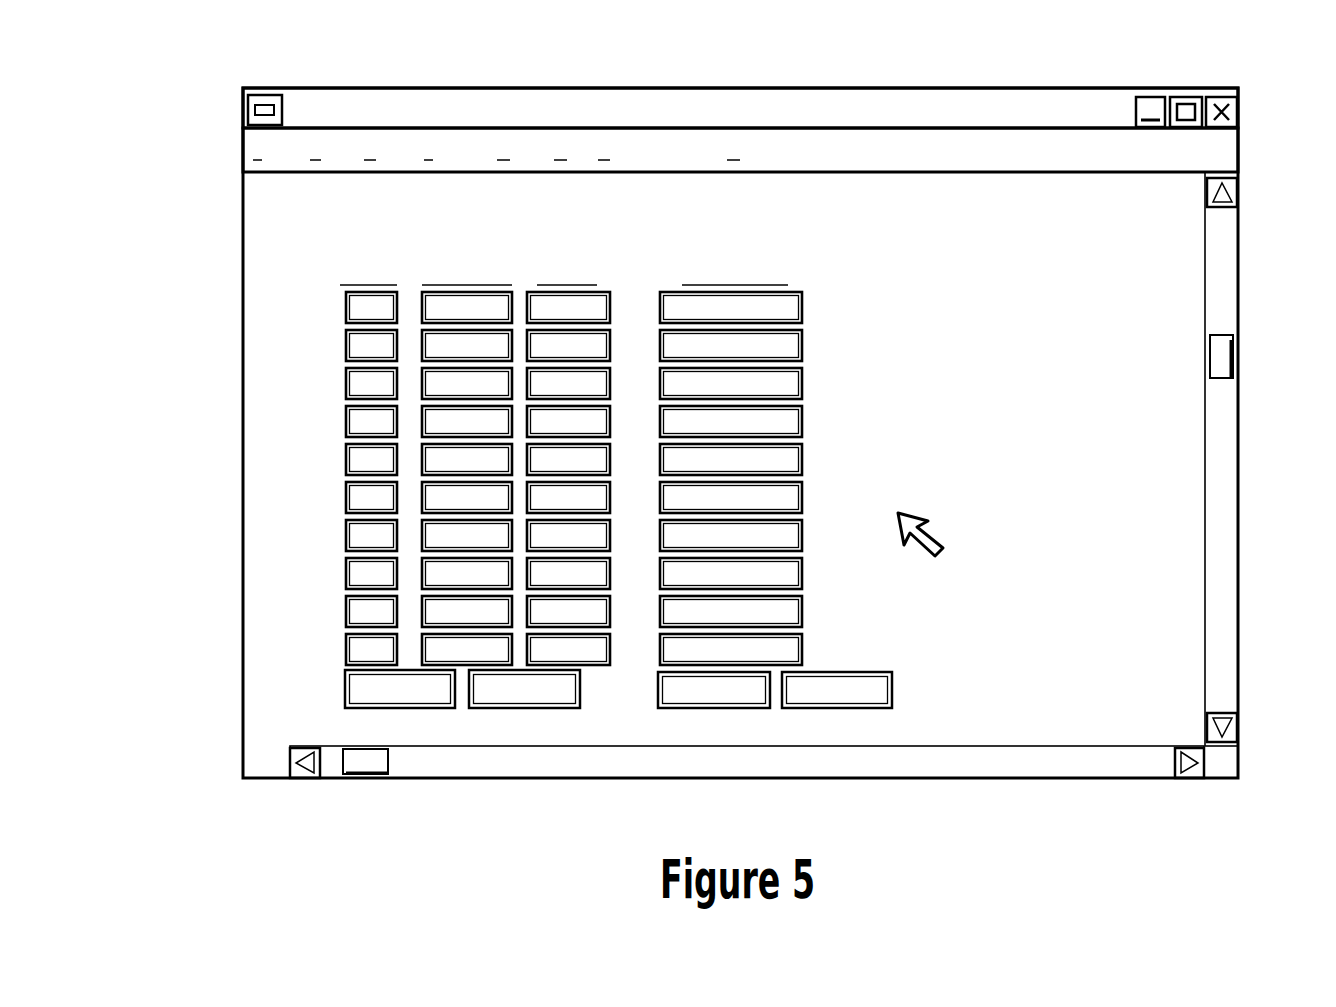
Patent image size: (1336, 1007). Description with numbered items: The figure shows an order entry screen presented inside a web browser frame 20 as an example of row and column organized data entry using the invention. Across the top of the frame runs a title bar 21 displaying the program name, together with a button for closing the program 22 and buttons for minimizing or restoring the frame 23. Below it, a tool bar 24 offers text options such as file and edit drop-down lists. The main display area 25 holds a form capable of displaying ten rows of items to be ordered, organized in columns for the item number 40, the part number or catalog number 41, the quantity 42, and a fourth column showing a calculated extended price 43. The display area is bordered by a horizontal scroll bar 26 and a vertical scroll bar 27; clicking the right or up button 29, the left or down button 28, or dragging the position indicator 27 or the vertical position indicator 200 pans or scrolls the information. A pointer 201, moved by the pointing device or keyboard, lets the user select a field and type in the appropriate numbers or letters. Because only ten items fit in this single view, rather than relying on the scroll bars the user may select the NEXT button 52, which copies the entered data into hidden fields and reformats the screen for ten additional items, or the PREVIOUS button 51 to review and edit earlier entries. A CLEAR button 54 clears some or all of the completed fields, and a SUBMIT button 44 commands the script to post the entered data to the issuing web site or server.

The web browser frame 20 is at (242, 313).
The title bar 21 is at (543, 108).
The close button 22 is at (267, 95).
The minimize/restore buttons 23 is at (1201, 90).
The tool bar 24 is at (607, 137).
The display area 25 is at (522, 470).
The horizontal scroll bar 26 is at (532, 780).
The vertical scroll bar / horizontal position indicator 27 is at (1239, 492).
The left/down button 28 is at (1239, 727).
The right/up button 29 is at (1239, 192).
The item number column 40 is at (397, 278).
The part number column 41 is at (512, 279).
The quantity column 42 is at (597, 282).
The extended price column 43 is at (788, 278).
The SUBMIT button 44 is at (836, 708).
The PREVIOUS button 51 is at (535, 708).
The NEXT button 52 is at (405, 708).
The CLEAR button 54 is at (698, 708).
The vertical position indicator 200 is at (1233, 360).
The pointer 201 is at (930, 524).